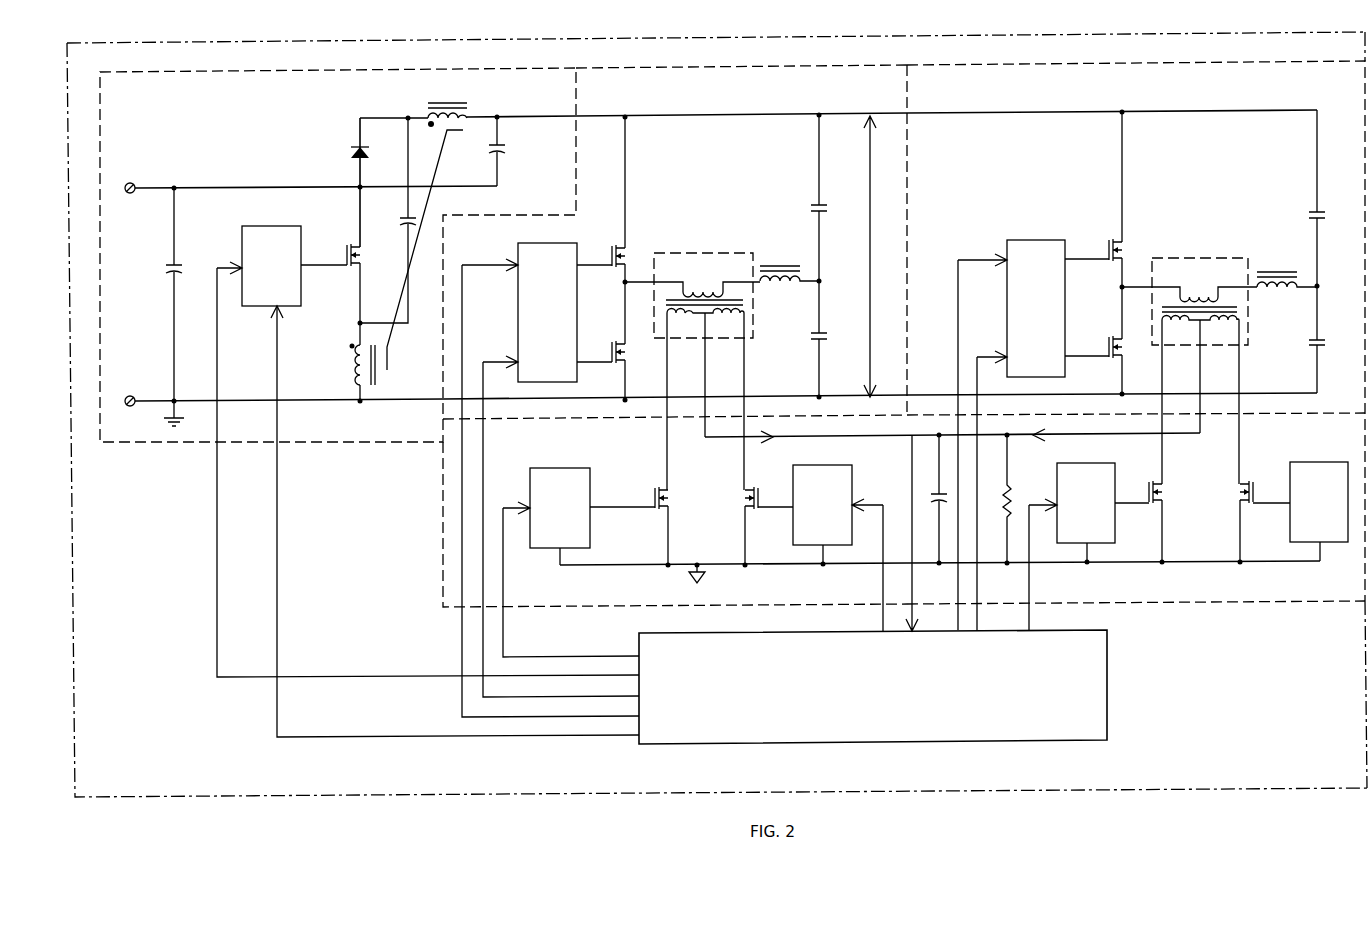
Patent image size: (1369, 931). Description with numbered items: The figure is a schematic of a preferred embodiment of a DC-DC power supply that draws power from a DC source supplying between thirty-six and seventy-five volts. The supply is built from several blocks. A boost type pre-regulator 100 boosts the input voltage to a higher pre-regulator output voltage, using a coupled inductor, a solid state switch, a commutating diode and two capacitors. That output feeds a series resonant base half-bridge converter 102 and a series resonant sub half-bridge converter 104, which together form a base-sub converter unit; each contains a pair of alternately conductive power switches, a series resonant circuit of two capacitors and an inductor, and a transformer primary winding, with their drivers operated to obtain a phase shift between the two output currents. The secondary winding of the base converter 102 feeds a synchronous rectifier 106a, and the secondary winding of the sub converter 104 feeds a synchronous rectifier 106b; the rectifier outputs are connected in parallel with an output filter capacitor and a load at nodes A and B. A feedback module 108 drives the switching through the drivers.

The boost type pre-regulator 100 is at (338, 255).
The series resonant base half-bridge resonant converter 102 is at (675, 277).
The series resonant sub half-bridge resonant converter 104 is at (1136, 331).
The synchronous rectifier 106a is at (699, 511).
The synchronous rectifier 106b is at (1136, 508).
The feedback module 108 is at (873, 687).